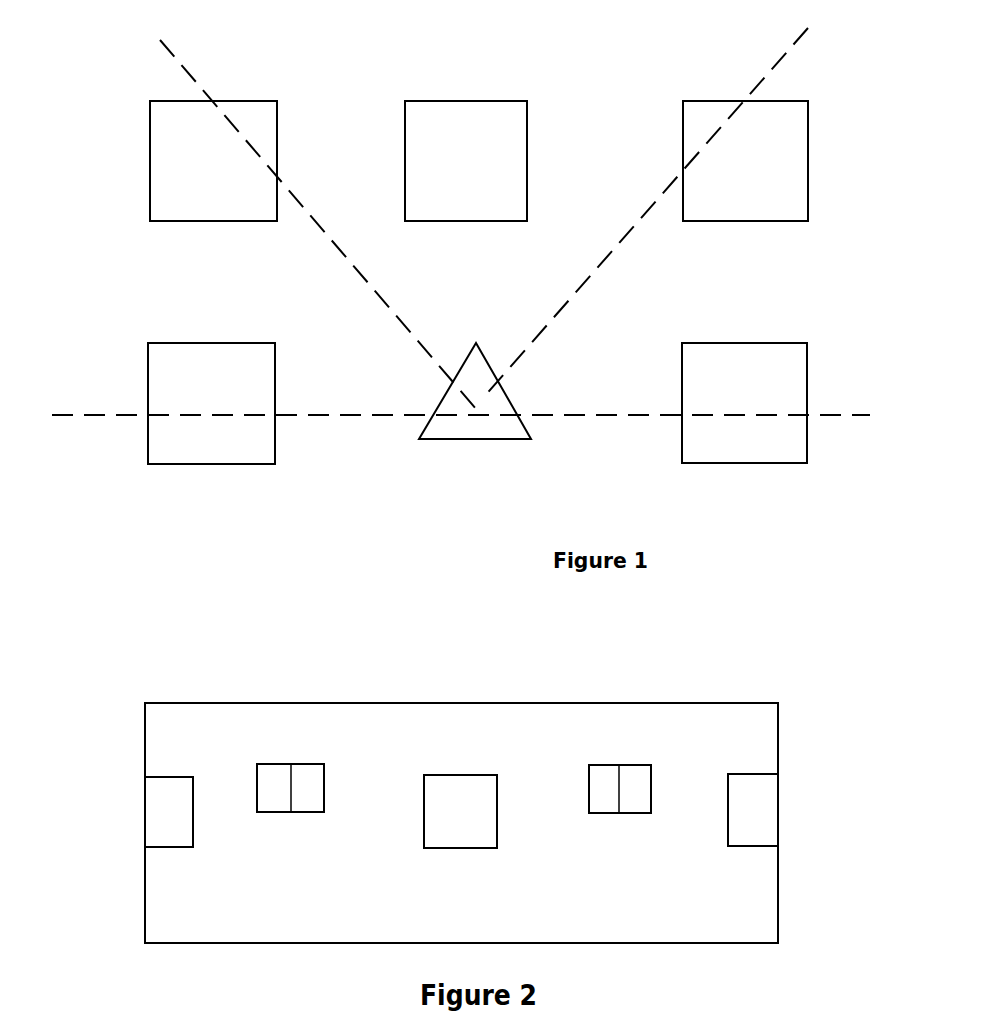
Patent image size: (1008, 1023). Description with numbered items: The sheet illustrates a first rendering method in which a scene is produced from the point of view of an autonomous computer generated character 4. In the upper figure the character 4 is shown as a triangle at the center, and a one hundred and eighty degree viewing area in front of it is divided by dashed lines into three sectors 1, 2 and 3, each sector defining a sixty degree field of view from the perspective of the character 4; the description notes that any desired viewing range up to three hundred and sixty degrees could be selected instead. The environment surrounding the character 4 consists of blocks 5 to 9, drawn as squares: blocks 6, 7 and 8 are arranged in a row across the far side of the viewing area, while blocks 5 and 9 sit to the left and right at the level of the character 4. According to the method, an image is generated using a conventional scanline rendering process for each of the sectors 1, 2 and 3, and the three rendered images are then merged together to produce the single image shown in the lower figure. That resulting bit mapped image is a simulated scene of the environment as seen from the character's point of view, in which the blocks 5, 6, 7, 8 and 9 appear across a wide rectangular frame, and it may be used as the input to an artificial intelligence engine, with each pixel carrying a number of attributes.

In FIG. 1, the sector 1 is at (459, 324).
In FIG. 1, the sector 2 is at (318, 220).
In FIG. 1, the sector 3 is at (686, 213).
In FIG. 1, the autonomous computer generated character 4 is at (475, 391).
In FIG. 1, the block 5 is at (211, 403).
In FIG. 2, the block 5 is at (169, 812).
In FIG. 1, the block 6 is at (213, 161).
In FIG. 2, the block 6 is at (290, 788).
In FIG. 1, the block 7 is at (466, 161).
In FIG. 2, the block 7 is at (460, 811).
In FIG. 1, the block 8 is at (745, 161).
In FIG. 2, the block 8 is at (620, 789).
In FIG. 1, the block 9 is at (744, 403).
In FIG. 2, the block 9 is at (753, 810).